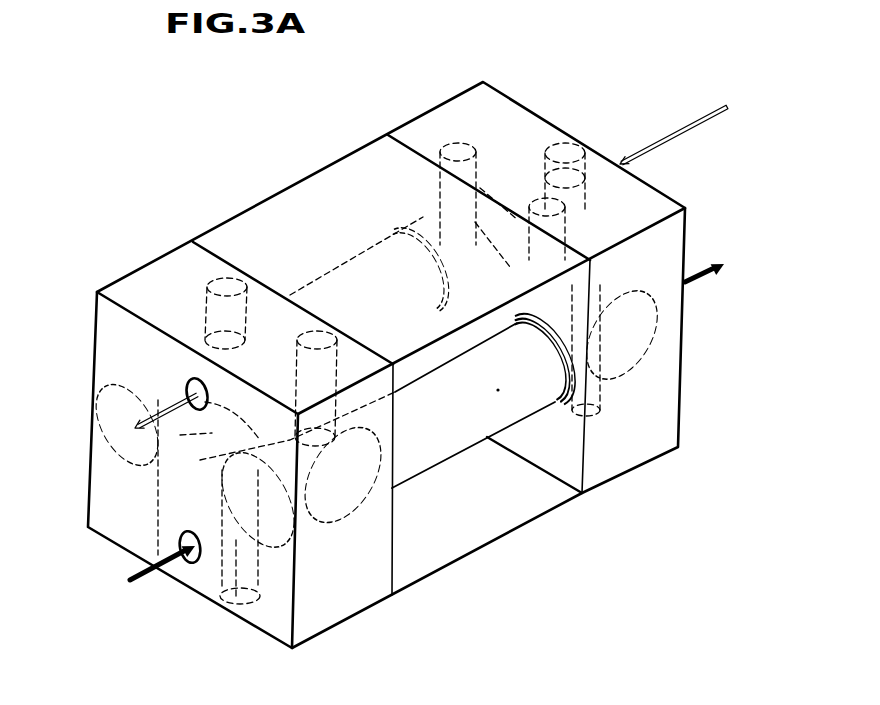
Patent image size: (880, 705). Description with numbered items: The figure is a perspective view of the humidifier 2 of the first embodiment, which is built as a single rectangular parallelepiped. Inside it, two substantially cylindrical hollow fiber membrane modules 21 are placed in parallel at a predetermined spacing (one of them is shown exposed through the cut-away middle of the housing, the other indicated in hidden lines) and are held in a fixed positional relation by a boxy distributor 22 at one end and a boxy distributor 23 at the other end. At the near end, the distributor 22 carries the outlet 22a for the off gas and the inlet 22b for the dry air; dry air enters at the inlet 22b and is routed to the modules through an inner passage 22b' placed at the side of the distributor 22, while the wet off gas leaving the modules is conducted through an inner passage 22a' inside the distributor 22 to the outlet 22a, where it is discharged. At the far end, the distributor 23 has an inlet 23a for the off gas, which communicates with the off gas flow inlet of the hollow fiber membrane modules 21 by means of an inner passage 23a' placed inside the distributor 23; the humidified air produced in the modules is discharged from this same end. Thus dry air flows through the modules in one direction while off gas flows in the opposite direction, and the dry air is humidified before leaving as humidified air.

The humidifier 2 is at (257, 177).
The hollow fiber membrane module 21 is at (370, 263).
The distributor at one end 22 is at (343, 600).
The outlet for the off gas 22a is at (123, 406).
The inner passage 22a' is at (145, 451).
The inlet for the dry air 22b is at (136, 579).
The inner passage 22b' is at (228, 600).
The distributor at another end 23 is at (635, 445).
The inlet for the off gas 23a is at (674, 136).
The inner passage 23a' is at (707, 228).